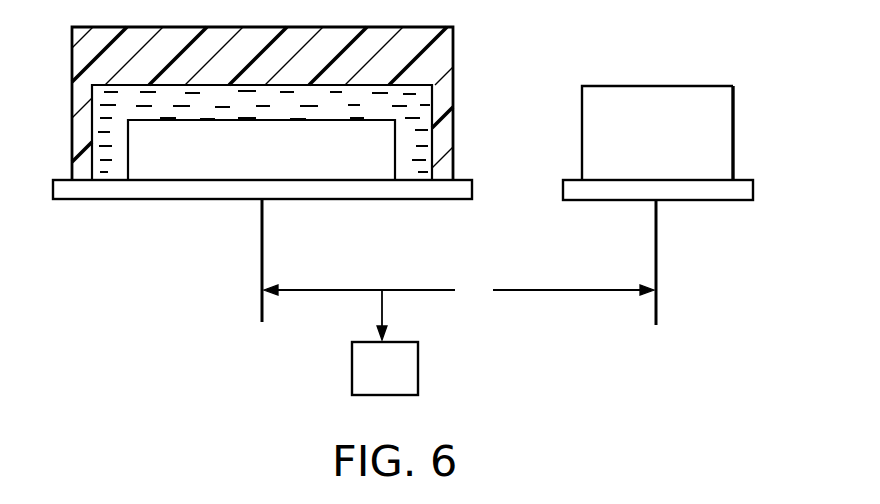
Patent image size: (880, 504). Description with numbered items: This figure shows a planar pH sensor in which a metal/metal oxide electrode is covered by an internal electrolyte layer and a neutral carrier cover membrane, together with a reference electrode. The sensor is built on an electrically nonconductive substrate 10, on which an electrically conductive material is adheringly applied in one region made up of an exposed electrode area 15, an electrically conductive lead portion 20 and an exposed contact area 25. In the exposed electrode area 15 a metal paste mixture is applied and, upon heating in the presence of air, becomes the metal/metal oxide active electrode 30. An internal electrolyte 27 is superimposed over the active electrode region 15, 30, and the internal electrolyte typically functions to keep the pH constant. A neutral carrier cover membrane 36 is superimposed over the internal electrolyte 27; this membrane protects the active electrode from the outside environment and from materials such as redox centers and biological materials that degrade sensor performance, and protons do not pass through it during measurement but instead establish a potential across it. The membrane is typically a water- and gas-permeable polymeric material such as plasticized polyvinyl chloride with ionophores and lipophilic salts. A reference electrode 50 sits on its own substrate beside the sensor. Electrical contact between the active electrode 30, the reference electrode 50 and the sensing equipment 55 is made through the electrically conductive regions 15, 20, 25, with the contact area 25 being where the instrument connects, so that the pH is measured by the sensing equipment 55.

The neutral carrier cover membrane 36 is at (454, 53).
The internal electrolyte 27 is at (422, 132).
The exposed electrode area 15 is at (261, 150).
The metal/metal oxide active electrode 30 is at (316, 168).
The electrically nonconductive substrate 10 is at (473, 187).
The electrically conductive lead portion 20 is at (188, 260).
The exposed contact area 25 is at (261, 238).
The reference electrode 50 is at (735, 123).
The sensing equipment 55 is at (401, 383).